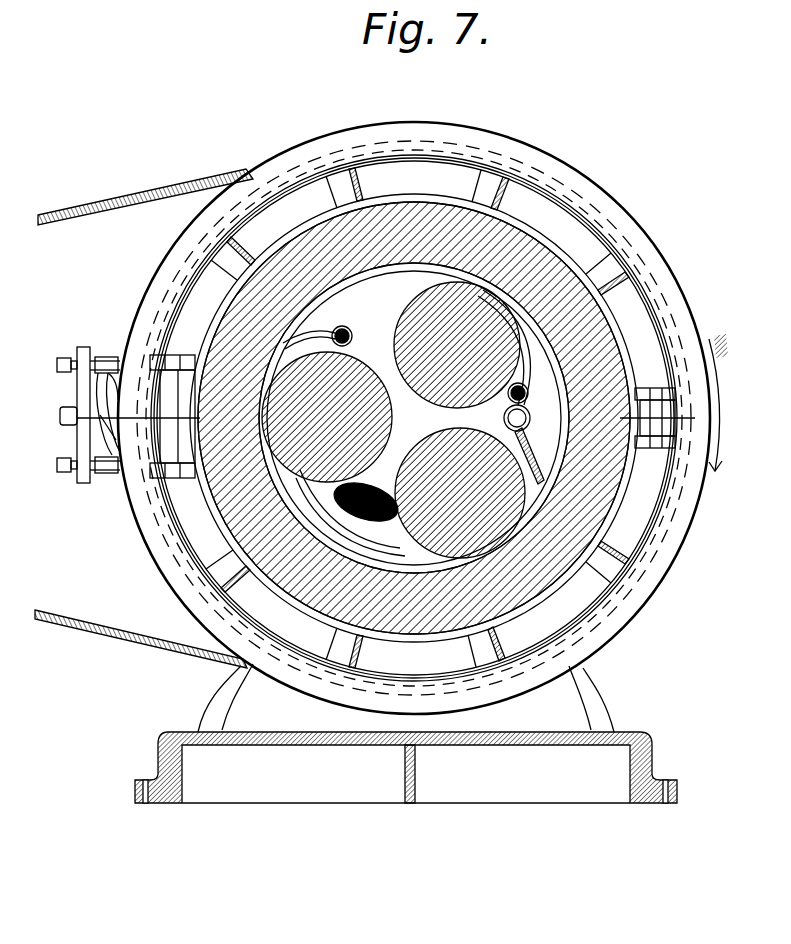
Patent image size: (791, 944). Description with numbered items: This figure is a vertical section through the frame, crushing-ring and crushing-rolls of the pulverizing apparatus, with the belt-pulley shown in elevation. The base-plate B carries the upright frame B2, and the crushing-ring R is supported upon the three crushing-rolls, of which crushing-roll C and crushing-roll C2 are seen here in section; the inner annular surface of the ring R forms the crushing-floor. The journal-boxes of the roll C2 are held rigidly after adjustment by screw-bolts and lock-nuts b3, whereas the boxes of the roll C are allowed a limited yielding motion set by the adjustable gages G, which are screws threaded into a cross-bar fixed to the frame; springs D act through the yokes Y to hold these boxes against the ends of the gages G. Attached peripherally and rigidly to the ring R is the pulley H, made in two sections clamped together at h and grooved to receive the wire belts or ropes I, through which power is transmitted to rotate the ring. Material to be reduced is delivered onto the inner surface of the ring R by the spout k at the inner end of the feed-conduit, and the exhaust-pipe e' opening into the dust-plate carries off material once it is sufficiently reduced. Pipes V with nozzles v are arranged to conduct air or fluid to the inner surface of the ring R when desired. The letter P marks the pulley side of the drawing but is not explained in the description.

The pulley H is at (414, 418).
The driving belt P is at (414, 397).
The crushing-ring R is at (276, 262).
The crushing-roll C is at (391, 382).
The crushing-roll C2 is at (460, 483).
The exhaust-pipe e' is at (365, 490).
The nozzle v is at (413, 358).
The pipe V is at (454, 370).
The spout k is at (534, 456).
The belt I is at (144, 418).
The spring D is at (104, 372).
The adjustable gage G is at (120, 421).
The yoke Y is at (178, 355).
The lock-nut b3 is at (185, 478).
The clamp h is at (657, 418).
The frame B2 is at (585, 690).
The base-plate B is at (406, 767).